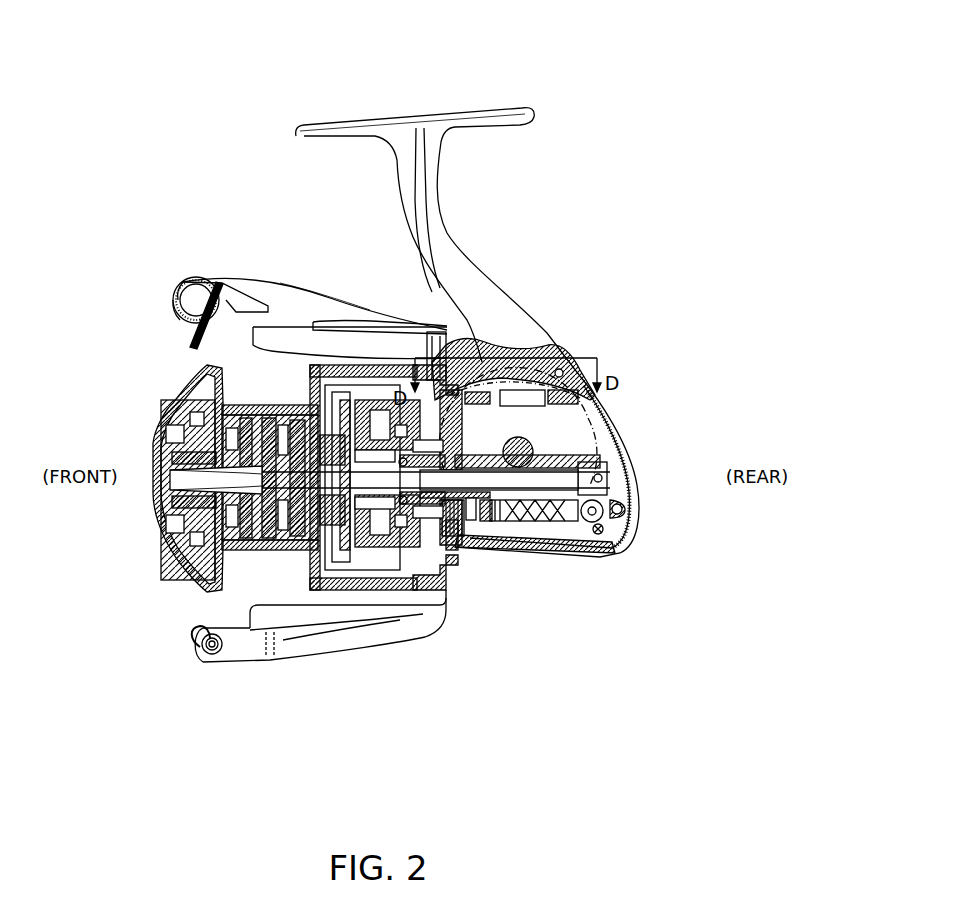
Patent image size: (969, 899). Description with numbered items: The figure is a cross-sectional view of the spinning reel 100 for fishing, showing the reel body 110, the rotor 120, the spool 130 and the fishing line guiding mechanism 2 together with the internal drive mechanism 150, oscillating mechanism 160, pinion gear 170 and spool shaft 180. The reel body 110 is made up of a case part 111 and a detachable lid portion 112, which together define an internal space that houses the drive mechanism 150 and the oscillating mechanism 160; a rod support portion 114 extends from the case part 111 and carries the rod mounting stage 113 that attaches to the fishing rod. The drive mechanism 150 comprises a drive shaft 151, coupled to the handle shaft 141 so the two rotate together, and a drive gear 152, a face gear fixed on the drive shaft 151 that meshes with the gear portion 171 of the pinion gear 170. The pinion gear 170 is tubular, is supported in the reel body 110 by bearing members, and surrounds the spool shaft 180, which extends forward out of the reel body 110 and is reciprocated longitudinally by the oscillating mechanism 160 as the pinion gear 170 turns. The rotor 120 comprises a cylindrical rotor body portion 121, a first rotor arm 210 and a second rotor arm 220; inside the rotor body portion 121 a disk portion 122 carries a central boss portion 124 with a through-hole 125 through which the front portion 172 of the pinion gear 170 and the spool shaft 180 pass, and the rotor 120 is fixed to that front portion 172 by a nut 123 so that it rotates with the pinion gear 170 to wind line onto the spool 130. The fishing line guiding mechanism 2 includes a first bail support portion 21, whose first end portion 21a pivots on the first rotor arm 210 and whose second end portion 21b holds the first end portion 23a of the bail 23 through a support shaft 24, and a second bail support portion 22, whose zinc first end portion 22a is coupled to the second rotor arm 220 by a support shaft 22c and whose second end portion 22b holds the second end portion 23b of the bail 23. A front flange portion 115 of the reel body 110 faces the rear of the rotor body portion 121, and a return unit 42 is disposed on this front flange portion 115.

The spinning reel 100 is at (583, 90).
The reel body 110 is at (441, 221).
The case part 111 is at (565, 471).
The lid portion 112 is at (642, 500).
The rod mounting stage 113 is at (468, 113).
The rod support portion 114 is at (528, 314).
The front flange portion 115 is at (450, 570).
The rotor 120 is at (371, 424).
The rotor body portion 121 is at (378, 382).
The disk portion 122 is at (306, 580).
The nut 123 is at (302, 548).
The boss portion 124 is at (372, 562).
The through-hole 125 is at (399, 566).
The spool 130 is at (263, 400).
The handle shaft 141 is at (607, 468).
The drive mechanism 150 is at (592, 433).
The drive shaft 151 is at (504, 448).
The drive gear 152 is at (623, 440).
The oscillating mechanism 160 is at (572, 525).
The pinion gear 170 is at (482, 510).
The gear portion 171 is at (452, 458).
The front portion 172 is at (340, 437).
The spool shaft 180 is at (541, 492).
The fishing line guiding mechanism 2 is at (180, 265).
The first bail support portion 21 is at (312, 282).
The first end portion 21a is at (314, 300).
The second end portion 21b is at (200, 280).
The first rotor arm 210 is at (340, 318).
The second bail support portion 22 is at (293, 674).
The first end portion 22a is at (288, 660).
The second end portion 22b is at (205, 668).
The support shaft 22c is at (269, 658).
The second rotor arm 220 is at (367, 638).
The bail 23 is at (193, 338).
The first end portion 23a is at (185, 306).
The second end portion 23b is at (198, 640).
The support shaft 24 is at (196, 300).
The return unit 42 is at (426, 358).